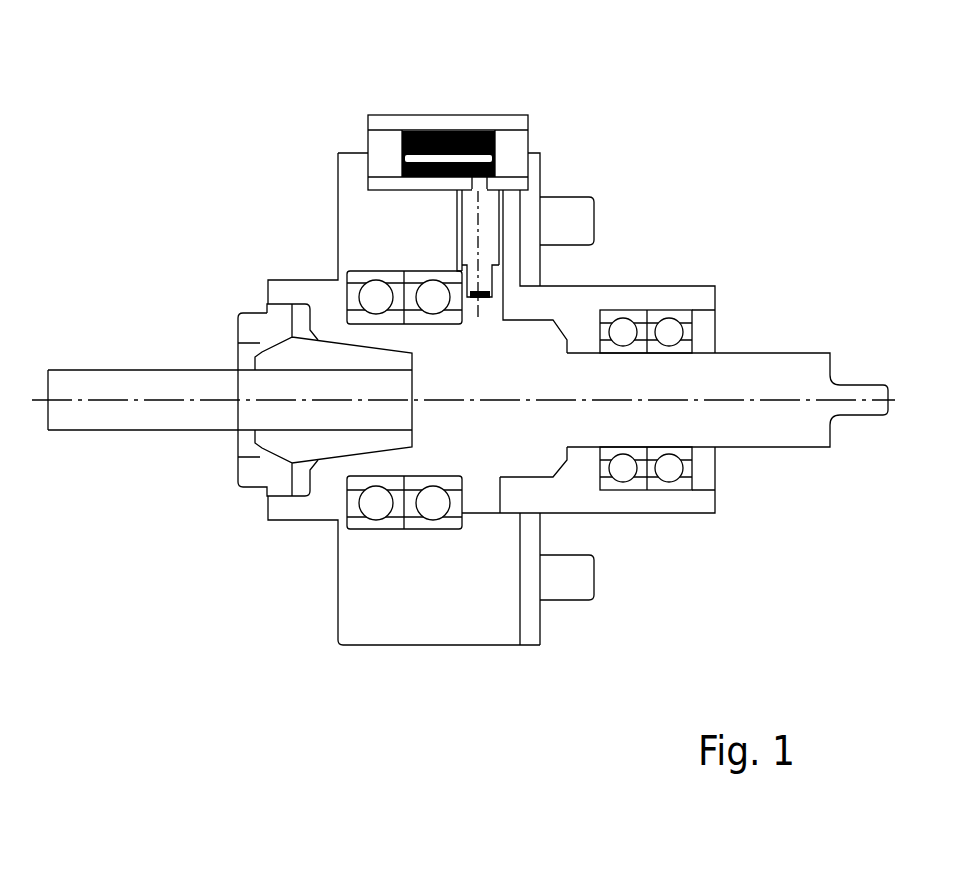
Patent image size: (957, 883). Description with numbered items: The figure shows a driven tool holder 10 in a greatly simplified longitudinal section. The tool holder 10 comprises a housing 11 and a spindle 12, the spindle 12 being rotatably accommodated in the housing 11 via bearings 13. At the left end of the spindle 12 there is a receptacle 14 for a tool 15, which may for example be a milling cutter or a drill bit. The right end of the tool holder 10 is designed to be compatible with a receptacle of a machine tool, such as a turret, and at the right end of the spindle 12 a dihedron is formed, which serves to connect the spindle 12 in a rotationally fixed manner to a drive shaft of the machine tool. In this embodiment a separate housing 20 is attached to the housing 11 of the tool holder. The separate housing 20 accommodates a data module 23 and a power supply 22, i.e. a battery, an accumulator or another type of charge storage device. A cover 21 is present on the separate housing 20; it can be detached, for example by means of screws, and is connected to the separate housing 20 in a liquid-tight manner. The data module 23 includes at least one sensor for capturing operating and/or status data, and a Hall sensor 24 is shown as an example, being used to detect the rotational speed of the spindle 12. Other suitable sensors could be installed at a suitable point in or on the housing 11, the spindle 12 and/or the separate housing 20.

The driven tool holder 10 is at (703, 130).
The housing 11 is at (355, 220).
The spindle 12 is at (770, 423).
The bearings 13 is at (375, 505).
The receptacle 14 is at (283, 450).
The tool 15 is at (123, 418).
The separate housing 20 is at (530, 133).
The cover 21 is at (392, 128).
The power supply 22 is at (458, 135).
The data module 23 is at (410, 168).
The Hall sensor 24 is at (482, 292).